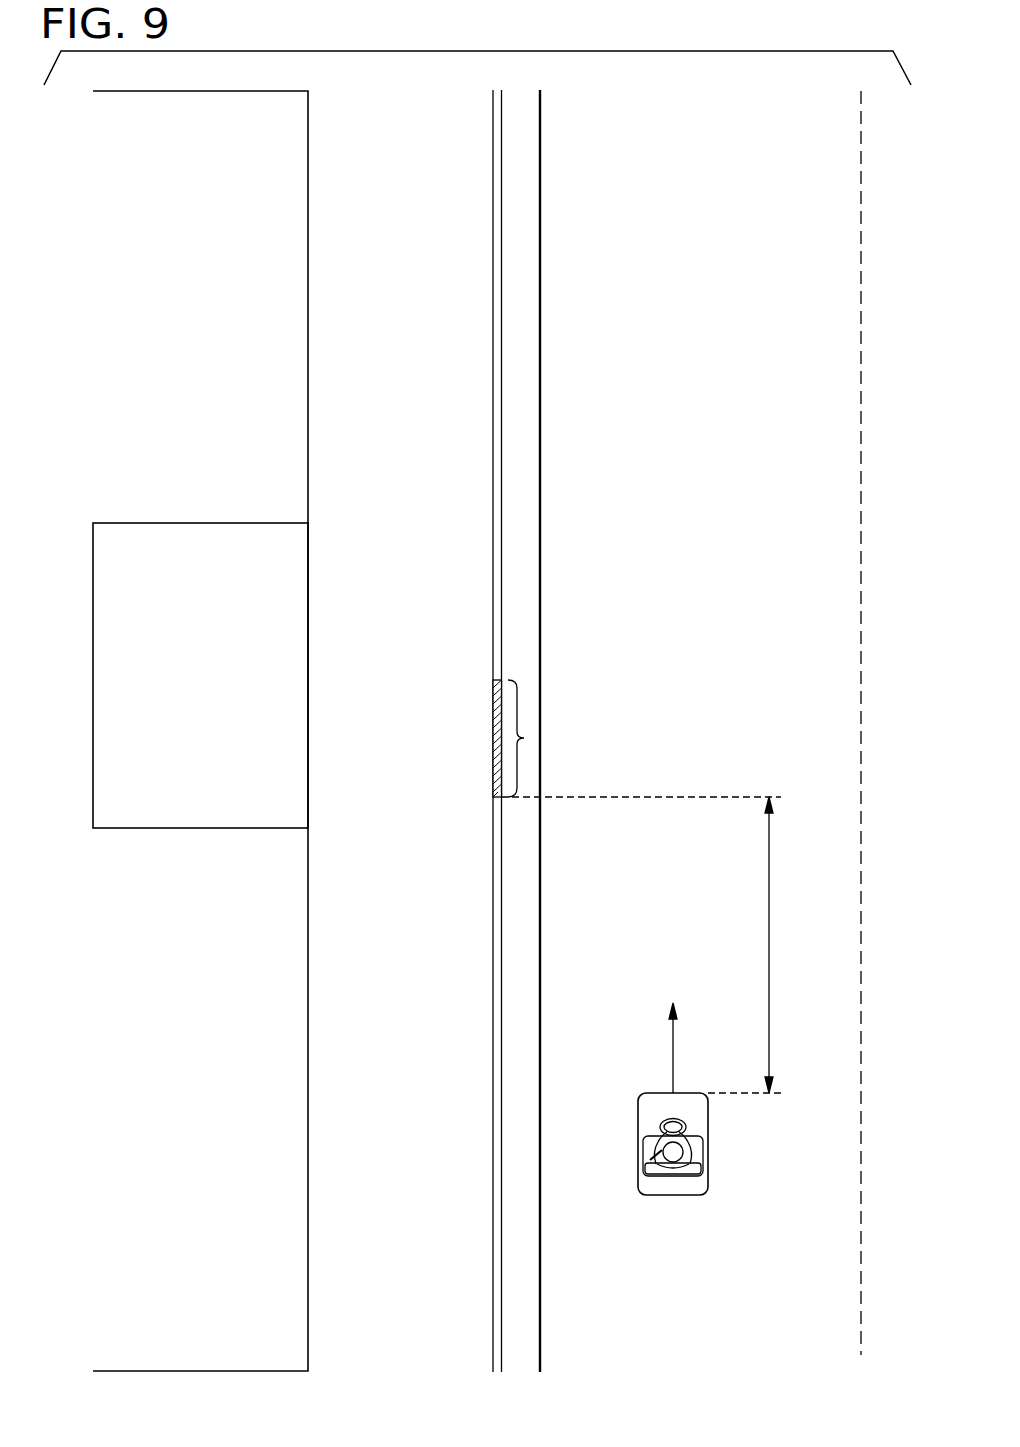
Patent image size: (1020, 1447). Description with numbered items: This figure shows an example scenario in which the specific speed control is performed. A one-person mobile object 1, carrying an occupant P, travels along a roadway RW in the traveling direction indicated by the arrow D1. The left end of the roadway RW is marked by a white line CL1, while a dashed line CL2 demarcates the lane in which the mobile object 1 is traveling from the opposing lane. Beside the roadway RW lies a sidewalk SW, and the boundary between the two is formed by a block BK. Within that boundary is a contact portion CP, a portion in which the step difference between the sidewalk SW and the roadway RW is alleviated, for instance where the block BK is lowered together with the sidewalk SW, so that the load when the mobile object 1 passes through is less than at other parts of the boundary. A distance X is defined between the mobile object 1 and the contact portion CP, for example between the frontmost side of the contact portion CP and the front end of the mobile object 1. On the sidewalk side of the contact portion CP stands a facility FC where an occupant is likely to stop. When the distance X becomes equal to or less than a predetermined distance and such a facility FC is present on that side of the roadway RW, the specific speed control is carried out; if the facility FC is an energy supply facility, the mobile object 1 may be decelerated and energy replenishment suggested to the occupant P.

The mobile object 1 is at (697, 1169).
The occupant P is at (699, 1151).
The facility FC is at (200, 675).
The sidewalk SW is at (415, 309).
The roadway RW is at (715, 309).
The block BK is at (496, 1325).
The white line CL1 is at (541, 1325).
The dashed line CL2 is at (860, 1325).
The contact portion CP is at (525, 738).
The distance X is at (782, 945).
The arrow indicating traveling direction D1 is at (688, 1048).